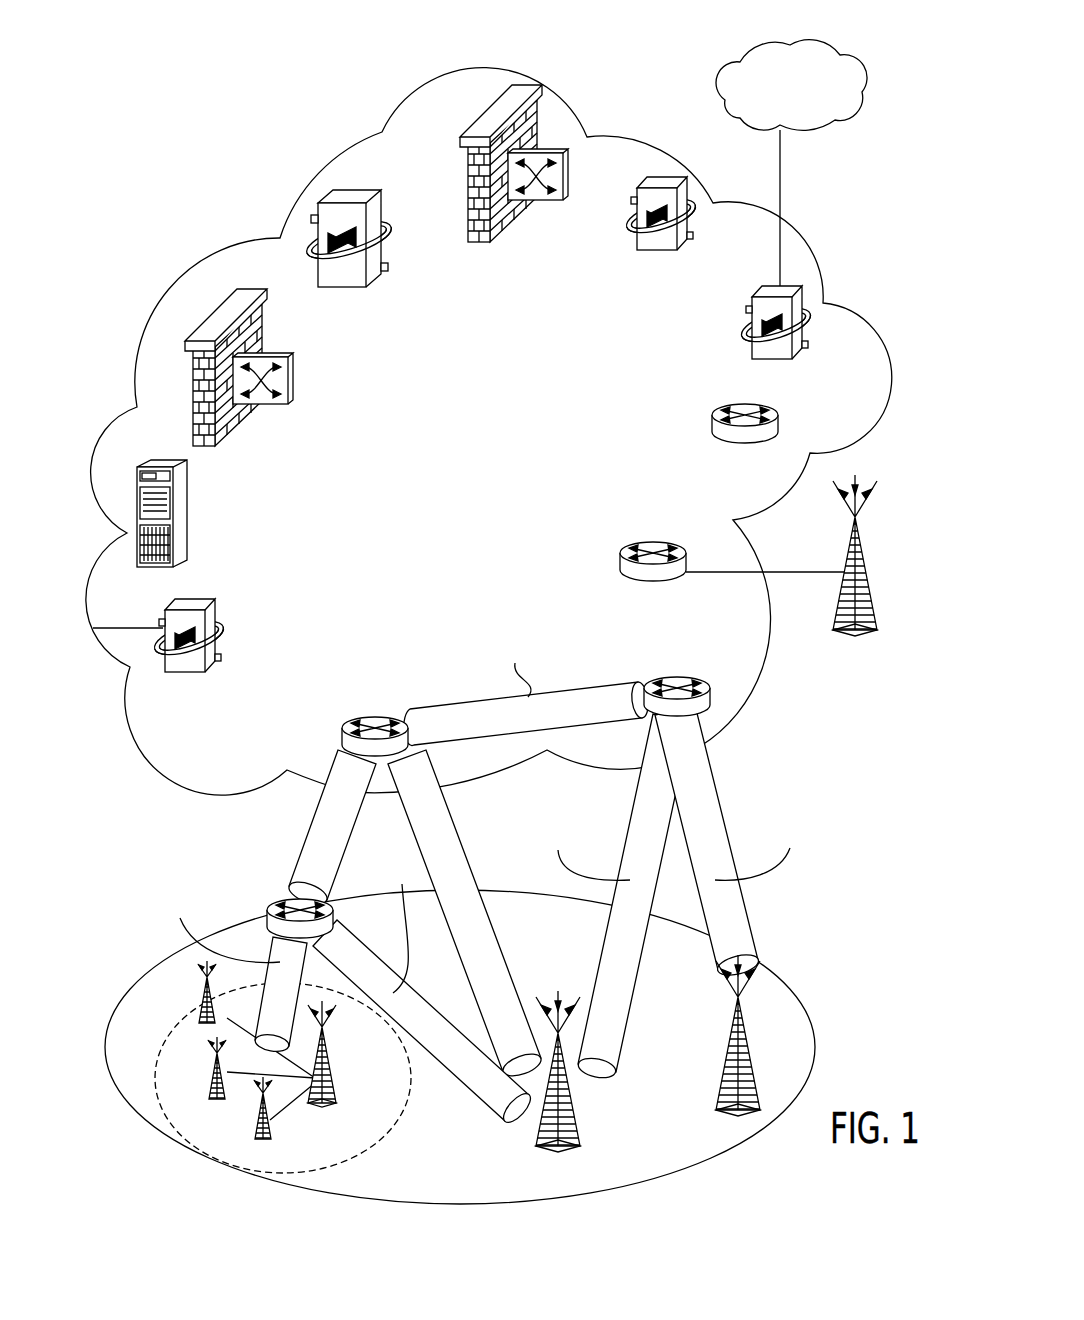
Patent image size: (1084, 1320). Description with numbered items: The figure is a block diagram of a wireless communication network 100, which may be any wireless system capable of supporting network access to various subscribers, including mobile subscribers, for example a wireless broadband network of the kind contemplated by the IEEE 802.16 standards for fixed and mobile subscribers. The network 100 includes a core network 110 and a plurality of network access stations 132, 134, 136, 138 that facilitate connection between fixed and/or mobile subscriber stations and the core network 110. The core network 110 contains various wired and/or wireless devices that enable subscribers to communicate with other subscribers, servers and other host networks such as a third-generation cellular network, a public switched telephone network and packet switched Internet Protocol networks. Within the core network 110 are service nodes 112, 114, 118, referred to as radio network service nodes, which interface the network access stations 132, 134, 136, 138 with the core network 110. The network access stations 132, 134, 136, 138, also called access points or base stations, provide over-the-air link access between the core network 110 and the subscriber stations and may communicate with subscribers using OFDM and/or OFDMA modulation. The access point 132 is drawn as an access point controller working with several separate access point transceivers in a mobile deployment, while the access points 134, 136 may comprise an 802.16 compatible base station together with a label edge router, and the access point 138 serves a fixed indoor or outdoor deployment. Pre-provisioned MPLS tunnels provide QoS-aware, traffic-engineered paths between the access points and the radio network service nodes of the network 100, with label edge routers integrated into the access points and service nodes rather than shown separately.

The wireless communication network 100 is at (143, 131).
The core network 110 is at (449, 526).
The service node 112 is at (302, 870).
The service node 114 is at (712, 686).
The service node 118 is at (804, 440).
The network access station 132 is at (367, 1097).
The network access station 134 is at (582, 1133).
The network access station 136 is at (752, 1082).
The network access station 138 is at (878, 600).